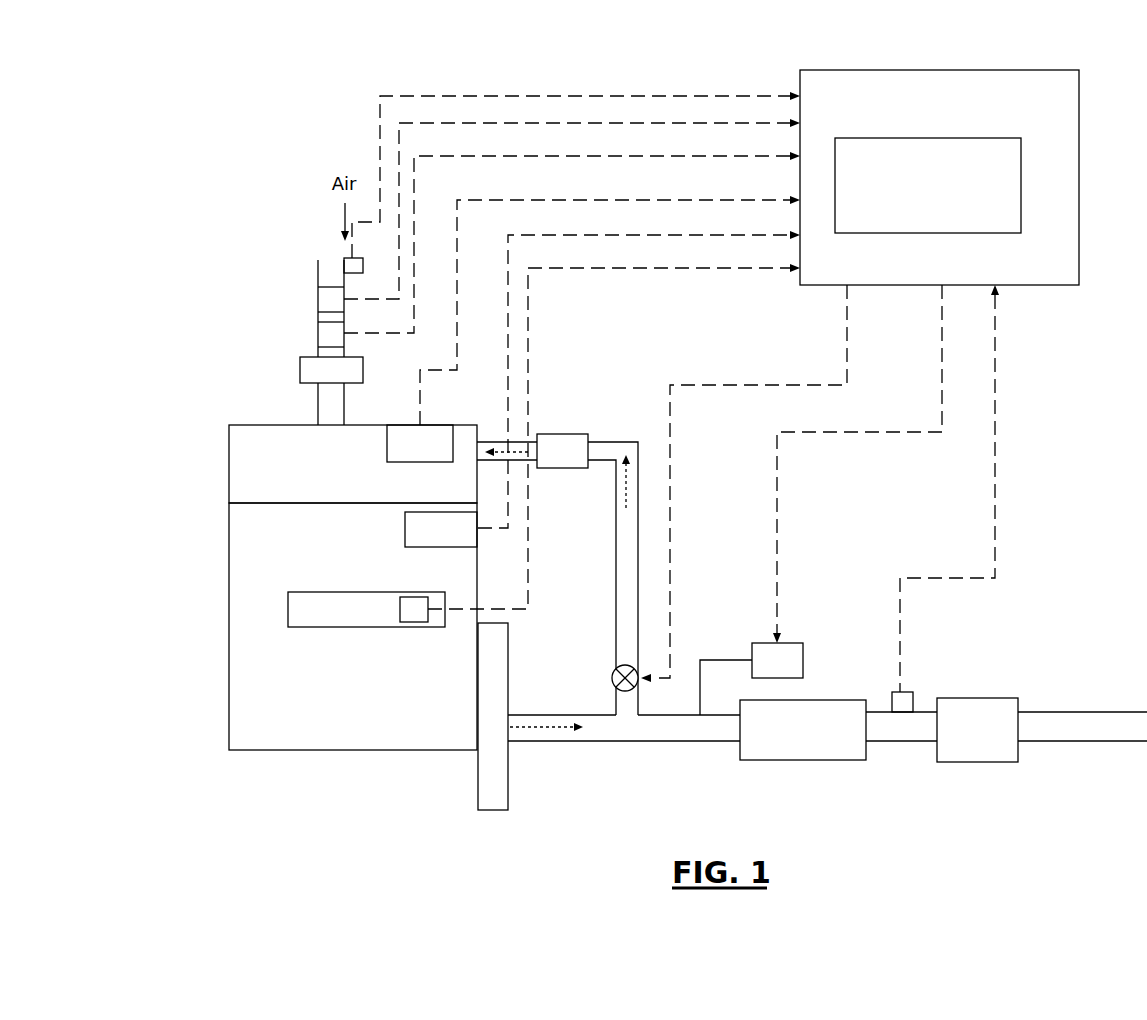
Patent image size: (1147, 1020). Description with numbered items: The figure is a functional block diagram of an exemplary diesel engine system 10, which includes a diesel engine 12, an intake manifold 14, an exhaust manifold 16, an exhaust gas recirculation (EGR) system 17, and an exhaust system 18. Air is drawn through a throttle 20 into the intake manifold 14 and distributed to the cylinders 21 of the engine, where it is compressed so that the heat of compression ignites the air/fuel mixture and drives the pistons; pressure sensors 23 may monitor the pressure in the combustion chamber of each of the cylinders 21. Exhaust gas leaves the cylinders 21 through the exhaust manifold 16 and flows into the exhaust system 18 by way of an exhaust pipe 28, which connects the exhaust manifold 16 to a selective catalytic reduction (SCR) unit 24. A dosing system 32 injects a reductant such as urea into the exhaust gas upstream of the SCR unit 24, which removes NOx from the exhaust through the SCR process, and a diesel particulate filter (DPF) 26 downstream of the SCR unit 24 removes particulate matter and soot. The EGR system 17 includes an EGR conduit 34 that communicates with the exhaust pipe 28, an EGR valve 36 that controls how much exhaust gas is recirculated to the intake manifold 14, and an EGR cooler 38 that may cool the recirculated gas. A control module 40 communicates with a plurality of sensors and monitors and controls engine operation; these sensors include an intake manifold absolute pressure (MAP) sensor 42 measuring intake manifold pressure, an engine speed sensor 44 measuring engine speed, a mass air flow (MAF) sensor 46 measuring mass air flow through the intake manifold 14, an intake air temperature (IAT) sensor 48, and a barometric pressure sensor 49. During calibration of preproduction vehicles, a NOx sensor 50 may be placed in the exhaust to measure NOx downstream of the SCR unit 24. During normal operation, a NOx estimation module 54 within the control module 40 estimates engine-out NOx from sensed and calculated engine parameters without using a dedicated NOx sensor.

The diesel engine system 10 is at (599, 64).
The diesel engine 12 is at (229, 628).
The intake manifold 14 is at (229, 463).
The exhaust manifold 16 is at (495, 812).
The exhaust gas recirculation (EGR) system 17 is at (594, 366).
The exhaust system 18 is at (880, 523).
The throttle 20 is at (300, 368).
The cylinders 21 is at (303, 628).
The pressure sensors 23 is at (413, 623).
The selective catalytic reduction (SCR) unit 24 is at (803, 761).
The diesel particulate filter (DPF) 26 is at (978, 763).
The exhaust pipe 28 is at (610, 743).
The dosing system 32 is at (793, 642).
The EGR conduit 34 is at (617, 621).
The EGR valve 36 is at (612, 680).
The EGR cooler 38 is at (562, 433).
The control module 40 is at (942, 70).
The intake manifold absolute pressure (MAP) sensor 42 is at (419, 463).
The engine speed sensor 44 is at (408, 548).
The mass air flow (MAF) sensor 46 is at (316, 333).
The intake air temperature (IAT) sensor 48 is at (316, 297).
The barometric pressure sensor 49 is at (344, 264).
The NOx sensor 50 is at (913, 702).
The NOx estimation module 54 is at (928, 137).